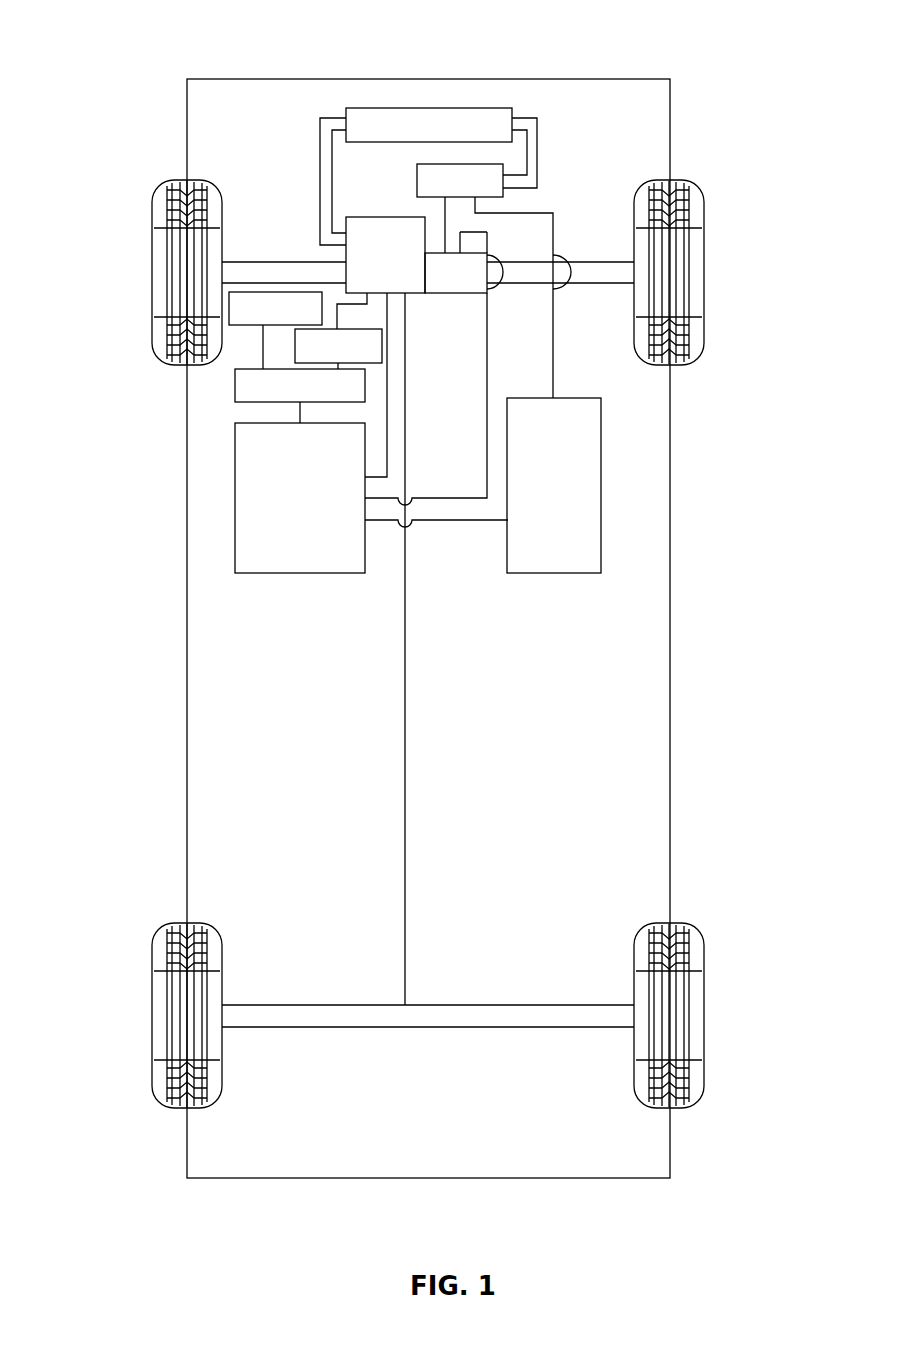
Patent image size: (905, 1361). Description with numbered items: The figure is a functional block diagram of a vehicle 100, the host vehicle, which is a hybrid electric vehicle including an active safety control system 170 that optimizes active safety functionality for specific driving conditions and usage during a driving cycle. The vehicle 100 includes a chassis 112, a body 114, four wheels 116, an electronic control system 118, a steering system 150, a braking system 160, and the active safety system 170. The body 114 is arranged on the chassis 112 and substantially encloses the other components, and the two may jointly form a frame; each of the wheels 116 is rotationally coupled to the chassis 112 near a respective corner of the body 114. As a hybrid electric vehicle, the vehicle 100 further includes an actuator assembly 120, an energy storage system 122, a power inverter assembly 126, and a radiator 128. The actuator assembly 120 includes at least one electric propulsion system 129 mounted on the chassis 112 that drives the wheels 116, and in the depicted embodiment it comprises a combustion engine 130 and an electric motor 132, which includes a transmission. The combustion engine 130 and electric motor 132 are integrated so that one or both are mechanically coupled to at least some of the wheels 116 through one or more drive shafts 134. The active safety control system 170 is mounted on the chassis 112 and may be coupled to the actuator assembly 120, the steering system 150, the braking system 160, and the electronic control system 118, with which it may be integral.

The vehicle 100 is at (144, 36).
The chassis 112 is at (405, 725).
The body 114 is at (187, 590).
The wheels 116 is at (152, 272).
The electronic control system 118 is at (235, 508).
The actuator assembly 120 is at (425, 298).
The energy storage system 122 is at (601, 458).
The power inverter assembly 126 is at (508, 167).
The radiator 128 is at (420, 107).
The electric propulsion system 129 is at (382, 228).
The combustion engine 130 is at (345, 252).
The electric motor/generator 132 is at (497, 262).
The drive shafts 134 is at (278, 260).
The steering system 150 is at (255, 292).
The braking system 160 is at (295, 347).
The active safety control system 170 is at (235, 388).